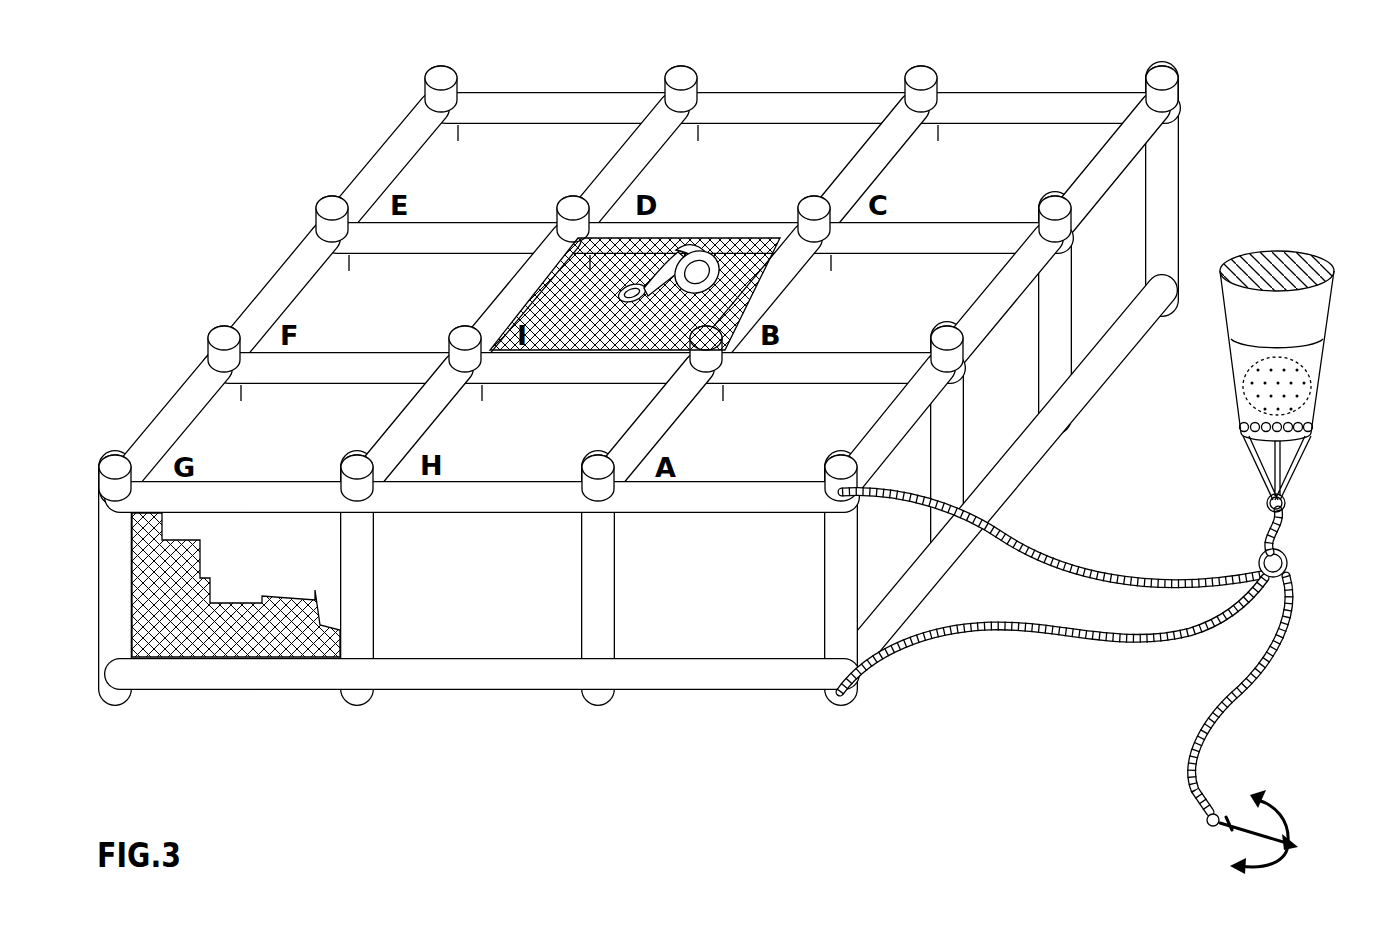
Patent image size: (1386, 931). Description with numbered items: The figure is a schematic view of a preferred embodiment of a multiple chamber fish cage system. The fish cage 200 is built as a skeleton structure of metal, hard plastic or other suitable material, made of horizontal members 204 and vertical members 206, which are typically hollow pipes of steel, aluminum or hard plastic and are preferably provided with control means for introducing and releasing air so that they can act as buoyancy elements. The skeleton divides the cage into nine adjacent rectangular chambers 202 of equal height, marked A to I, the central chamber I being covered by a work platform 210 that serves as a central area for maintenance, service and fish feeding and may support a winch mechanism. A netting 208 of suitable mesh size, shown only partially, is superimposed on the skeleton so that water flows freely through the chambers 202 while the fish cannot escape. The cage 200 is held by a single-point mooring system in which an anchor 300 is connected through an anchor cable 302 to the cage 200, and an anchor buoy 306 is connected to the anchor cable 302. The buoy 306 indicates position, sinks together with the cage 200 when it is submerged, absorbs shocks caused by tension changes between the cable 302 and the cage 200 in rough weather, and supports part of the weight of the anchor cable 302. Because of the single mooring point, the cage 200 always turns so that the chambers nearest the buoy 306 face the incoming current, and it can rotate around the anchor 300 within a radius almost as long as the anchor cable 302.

The fish cage 200 is at (721, 361).
The chambers 202 is at (437, 166).
The horizontal members 204 is at (1150, 112).
The vertical members 206 is at (1170, 190).
The netting 208 is at (197, 627).
The work platform 210 is at (513, 317).
The anchor 300 is at (1271, 801).
The anchor cable 302 is at (1137, 636).
The anchor buoy 306 is at (1380, 357).